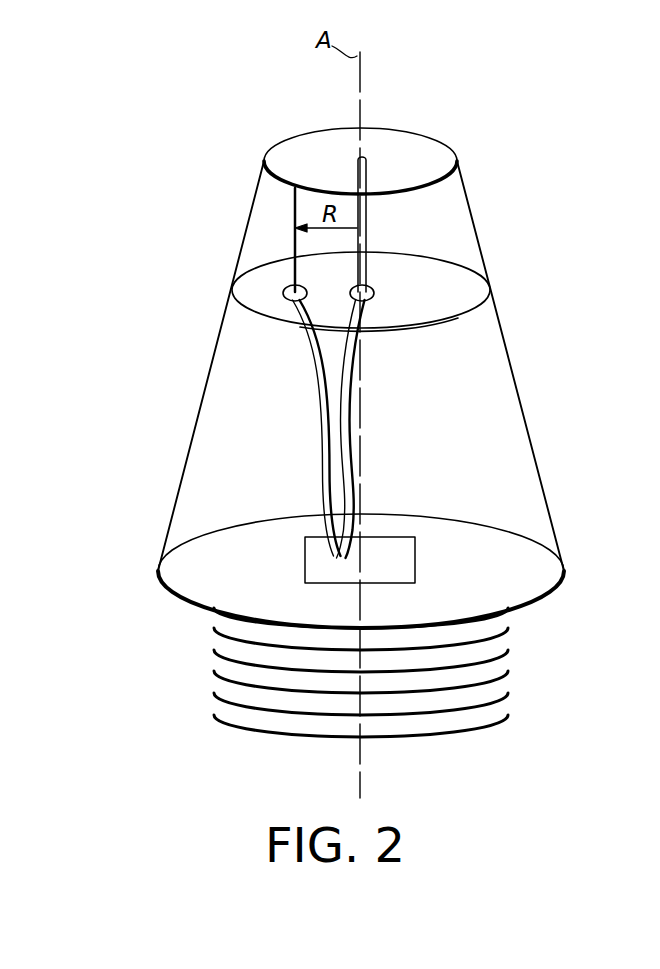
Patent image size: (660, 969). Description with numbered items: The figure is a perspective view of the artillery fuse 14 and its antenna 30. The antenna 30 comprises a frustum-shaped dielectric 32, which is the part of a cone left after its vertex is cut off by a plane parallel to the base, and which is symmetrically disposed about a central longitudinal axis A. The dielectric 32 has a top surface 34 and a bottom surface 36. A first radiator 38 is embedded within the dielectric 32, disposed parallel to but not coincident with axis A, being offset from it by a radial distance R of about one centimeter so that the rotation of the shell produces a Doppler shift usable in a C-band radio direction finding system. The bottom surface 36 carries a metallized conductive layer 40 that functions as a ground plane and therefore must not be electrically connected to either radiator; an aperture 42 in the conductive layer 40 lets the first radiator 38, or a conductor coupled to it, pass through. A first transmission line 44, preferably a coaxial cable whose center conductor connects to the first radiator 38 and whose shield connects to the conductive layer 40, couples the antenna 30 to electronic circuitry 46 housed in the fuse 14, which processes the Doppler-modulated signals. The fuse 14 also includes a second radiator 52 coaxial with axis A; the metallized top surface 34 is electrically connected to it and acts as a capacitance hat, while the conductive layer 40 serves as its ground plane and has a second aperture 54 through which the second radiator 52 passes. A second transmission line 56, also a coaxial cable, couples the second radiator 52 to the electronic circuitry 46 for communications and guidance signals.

The fuse 14 is at (130, 287).
The antenna 30 is at (490, 210).
The frustum-shaped dielectric 32 is at (252, 218).
The top surface 34 is at (412, 143).
The bottom surface 36 is at (481, 283).
The first radiator 38 is at (261, 229).
The conductive layer 40 is at (454, 318).
The aperture 42 is at (288, 293).
The first transmission line 44 is at (320, 402).
The electronic circuitry 46 is at (316, 567).
The second radiator 52 is at (367, 212).
The aperture 54 is at (371, 302).
The second transmission line 56 is at (348, 411).